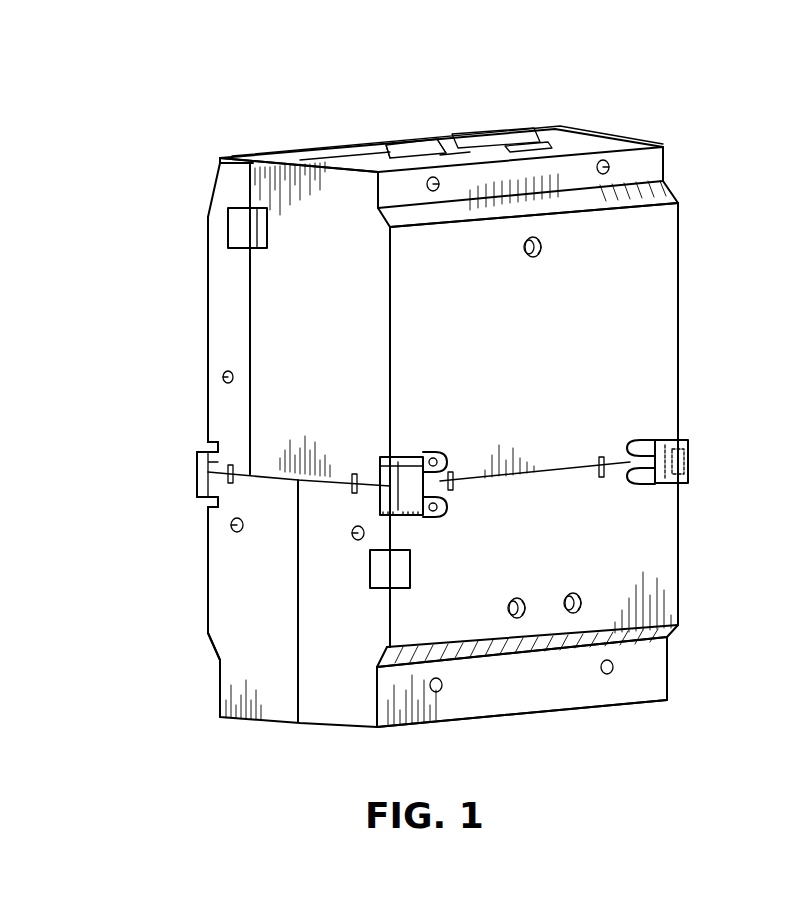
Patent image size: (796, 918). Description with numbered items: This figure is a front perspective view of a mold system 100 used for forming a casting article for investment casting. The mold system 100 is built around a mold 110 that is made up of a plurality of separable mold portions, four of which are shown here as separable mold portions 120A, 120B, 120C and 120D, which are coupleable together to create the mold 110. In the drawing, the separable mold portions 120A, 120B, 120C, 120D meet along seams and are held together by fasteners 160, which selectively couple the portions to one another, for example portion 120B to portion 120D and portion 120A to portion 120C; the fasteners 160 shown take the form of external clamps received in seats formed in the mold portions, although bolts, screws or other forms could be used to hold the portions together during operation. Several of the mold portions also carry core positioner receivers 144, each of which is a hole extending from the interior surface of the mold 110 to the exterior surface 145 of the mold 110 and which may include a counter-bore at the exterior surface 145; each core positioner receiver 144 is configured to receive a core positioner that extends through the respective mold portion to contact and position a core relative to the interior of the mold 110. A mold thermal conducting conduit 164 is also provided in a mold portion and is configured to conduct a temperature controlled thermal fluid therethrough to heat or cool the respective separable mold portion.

The mold system 100 is at (668, 128).
The mold 110 is at (665, 268).
The separable mold portion 120A is at (220, 676).
The separable mold portion 120B is at (612, 688).
The separable mold portion 120C is at (218, 340).
The separable mold portion 120D is at (648, 345).
The core positioner receiver 144 is at (527, 257).
The exterior surface 145 is at (335, 374).
The fastener 160 is at (228, 228).
The mold thermal conducting conduit 164 is at (222, 377).